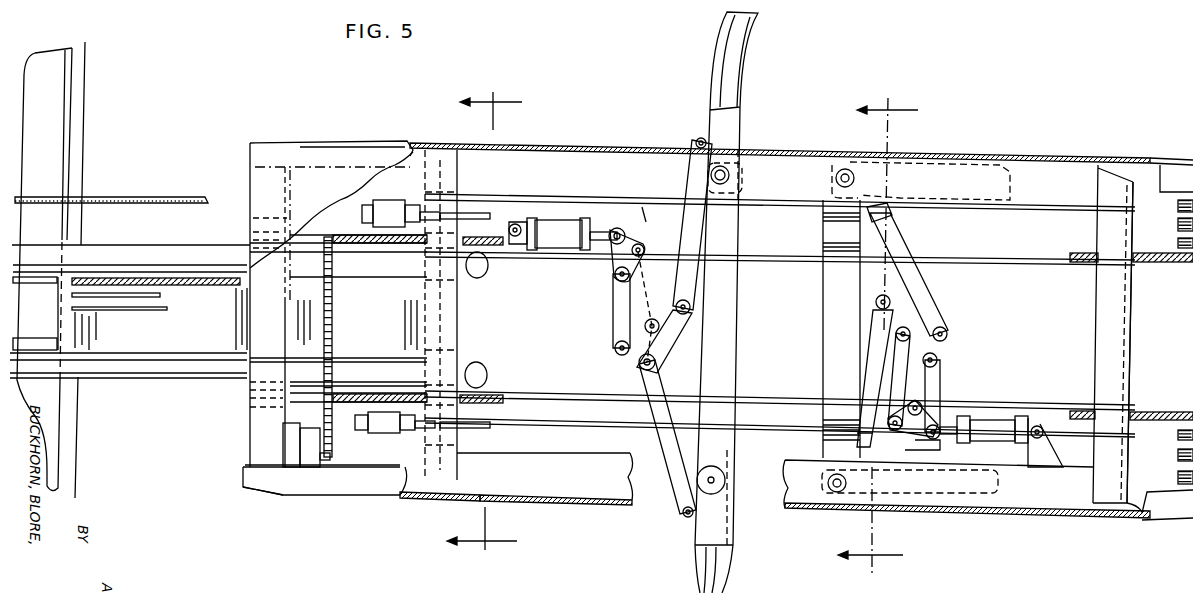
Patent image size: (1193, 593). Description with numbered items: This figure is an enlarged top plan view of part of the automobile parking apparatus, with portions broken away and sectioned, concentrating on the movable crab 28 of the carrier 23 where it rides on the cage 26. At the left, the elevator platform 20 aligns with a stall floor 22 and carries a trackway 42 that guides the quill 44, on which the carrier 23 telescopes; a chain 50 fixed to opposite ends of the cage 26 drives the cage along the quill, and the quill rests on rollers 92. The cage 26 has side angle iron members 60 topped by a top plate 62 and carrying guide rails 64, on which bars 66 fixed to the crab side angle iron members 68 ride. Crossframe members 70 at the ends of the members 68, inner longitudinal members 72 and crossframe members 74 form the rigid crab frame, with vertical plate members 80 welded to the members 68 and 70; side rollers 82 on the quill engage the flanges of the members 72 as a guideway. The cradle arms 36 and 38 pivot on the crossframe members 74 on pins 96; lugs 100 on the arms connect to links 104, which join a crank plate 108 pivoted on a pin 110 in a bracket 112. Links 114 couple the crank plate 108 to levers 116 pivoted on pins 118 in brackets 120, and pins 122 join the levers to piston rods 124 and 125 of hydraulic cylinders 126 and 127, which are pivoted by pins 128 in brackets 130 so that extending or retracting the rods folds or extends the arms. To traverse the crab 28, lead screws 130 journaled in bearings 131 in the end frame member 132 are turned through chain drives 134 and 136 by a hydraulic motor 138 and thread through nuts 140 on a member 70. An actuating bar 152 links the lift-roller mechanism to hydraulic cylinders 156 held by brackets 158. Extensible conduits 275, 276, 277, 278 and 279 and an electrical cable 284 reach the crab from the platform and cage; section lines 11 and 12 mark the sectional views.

The section line 11- 11 is at (484, 324).
The section line 12- 12 is at (879, 336).
The elevator platform 20 is at (52, 444).
The floor 22 is at (80, 475).
The carrier 23 is at (312, 500).
The cage 26 is at (1123, 157).
The movable crab 28 is at (1133, 303).
The cradle arm 36 is at (722, 533).
The cradle arm 38 is at (965, 515).
The trackway 42 is at (26, 340).
The quill 44 is at (172, 379).
The chain 50 is at (206, 287).
The side angle iron member 60 is at (350, 490).
The top plate 62 is at (313, 157).
The guide rail 64 is at (415, 493).
The bar 66 is at (530, 500).
The side angle iron member 68 is at (583, 490).
The crossframe member 70 is at (1120, 338).
The inner longitudinal angle iron member 72 is at (1030, 264).
The crossframe member 74 is at (824, 322).
The longitudinal vertical plate member 80 is at (977, 210).
The side roller 82 is at (504, 372).
The roller 92 is at (204, 353).
The pin 96 is at (820, 482).
The lug 100 is at (692, 517).
The link 104 is at (923, 294).
The crank plate 108 is at (947, 347).
The pin 110 is at (908, 340).
The bracket 112 is at (867, 307).
The link 114 is at (937, 373).
The lever 116 is at (913, 407).
The pin 118 is at (630, 257).
The bracket 120 is at (642, 207).
The pin 122 is at (892, 422).
The piston rod 124 is at (608, 228).
The piston rod 125 is at (950, 418).
The hydraulic cylinder 126 is at (544, 218).
The hydraulic cylinder 127 is at (997, 422).
The pin 128 is at (1038, 428).
The lead screw 130 is at (1037, 460).
The radial and thrust bearing 131 is at (263, 407).
The end frame member 132 is at (252, 192).
The chain drive 134 is at (332, 305).
The chain drive 136 is at (323, 458).
The hydraulic motor 138 is at (298, 457).
The nut 140 is at (440, 385).
The actuating bar 152 is at (480, 426).
The hydraulic cylinder 156 is at (378, 440).
The bracket 158 is at (392, 435).
The conduit 275 is at (1178, 477).
The conduit 276 is at (1180, 206).
The conduit 277 is at (1178, 455).
The conduit 278 is at (1180, 224).
The conduit 279 is at (1178, 435).
The electrical cable 284 is at (121, 199).